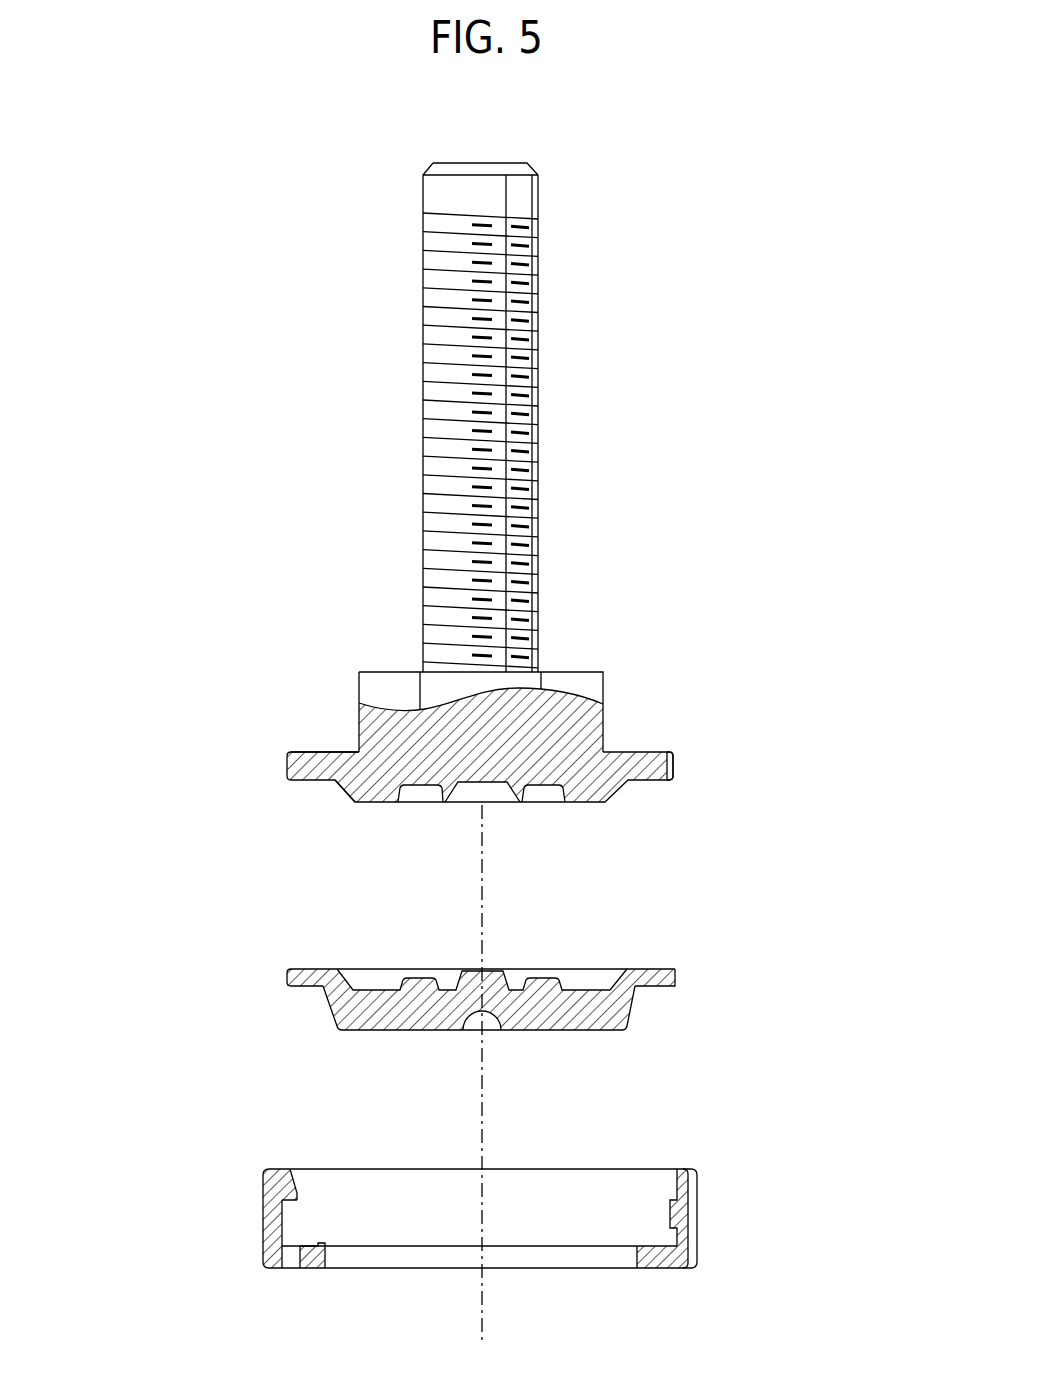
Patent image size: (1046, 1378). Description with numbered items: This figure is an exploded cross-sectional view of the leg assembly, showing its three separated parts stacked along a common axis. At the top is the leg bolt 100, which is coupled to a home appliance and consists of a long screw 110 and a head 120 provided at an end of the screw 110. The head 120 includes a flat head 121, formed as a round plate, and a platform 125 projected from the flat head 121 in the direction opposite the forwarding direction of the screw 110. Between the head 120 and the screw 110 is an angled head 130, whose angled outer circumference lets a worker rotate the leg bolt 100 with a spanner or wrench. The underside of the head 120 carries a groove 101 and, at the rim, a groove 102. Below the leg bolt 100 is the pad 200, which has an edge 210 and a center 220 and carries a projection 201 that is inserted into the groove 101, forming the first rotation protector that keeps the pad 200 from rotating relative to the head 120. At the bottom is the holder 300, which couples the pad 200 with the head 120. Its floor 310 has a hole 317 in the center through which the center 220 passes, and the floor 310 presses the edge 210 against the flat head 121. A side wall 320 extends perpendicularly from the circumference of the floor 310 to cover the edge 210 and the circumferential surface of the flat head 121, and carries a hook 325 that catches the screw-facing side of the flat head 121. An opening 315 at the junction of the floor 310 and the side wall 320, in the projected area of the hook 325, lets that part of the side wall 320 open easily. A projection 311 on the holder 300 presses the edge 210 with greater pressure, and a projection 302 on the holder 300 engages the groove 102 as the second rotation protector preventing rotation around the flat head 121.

The leg bolt 100 is at (441, 513).
The screw 110 is at (433, 487).
The angled head 130 is at (392, 677).
The head 120 is at (402, 785).
The flat head 121 is at (287, 763).
The platform 125 is at (360, 795).
The groove 101 is at (420, 792).
The groove 102 is at (673, 764).
The pad 200 is at (422, 998).
The projection 201 is at (418, 982).
The edge 210 is at (657, 968).
The center 220 is at (540, 1017).
The holder 300 is at (486, 1215).
The projection 302 is at (672, 1215).
The floor 310 is at (313, 1243).
The projection 311 is at (640, 1246).
The opening 315 is at (292, 1258).
The hole 317 is at (528, 1260).
The side wall 320 is at (270, 1218).
The hook 325 is at (287, 1172).